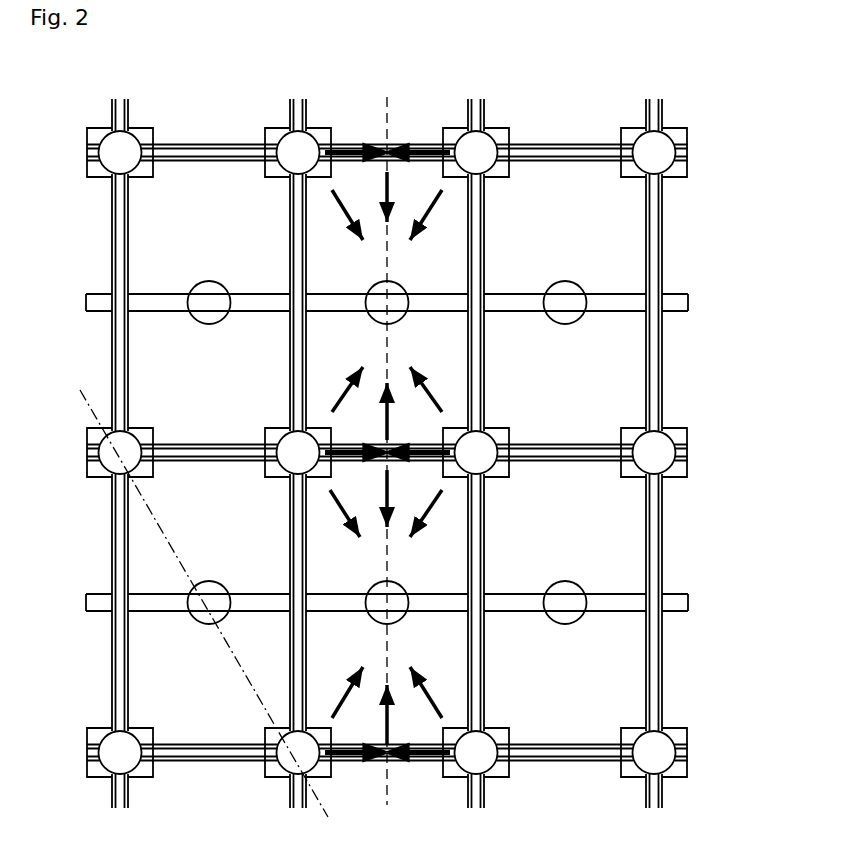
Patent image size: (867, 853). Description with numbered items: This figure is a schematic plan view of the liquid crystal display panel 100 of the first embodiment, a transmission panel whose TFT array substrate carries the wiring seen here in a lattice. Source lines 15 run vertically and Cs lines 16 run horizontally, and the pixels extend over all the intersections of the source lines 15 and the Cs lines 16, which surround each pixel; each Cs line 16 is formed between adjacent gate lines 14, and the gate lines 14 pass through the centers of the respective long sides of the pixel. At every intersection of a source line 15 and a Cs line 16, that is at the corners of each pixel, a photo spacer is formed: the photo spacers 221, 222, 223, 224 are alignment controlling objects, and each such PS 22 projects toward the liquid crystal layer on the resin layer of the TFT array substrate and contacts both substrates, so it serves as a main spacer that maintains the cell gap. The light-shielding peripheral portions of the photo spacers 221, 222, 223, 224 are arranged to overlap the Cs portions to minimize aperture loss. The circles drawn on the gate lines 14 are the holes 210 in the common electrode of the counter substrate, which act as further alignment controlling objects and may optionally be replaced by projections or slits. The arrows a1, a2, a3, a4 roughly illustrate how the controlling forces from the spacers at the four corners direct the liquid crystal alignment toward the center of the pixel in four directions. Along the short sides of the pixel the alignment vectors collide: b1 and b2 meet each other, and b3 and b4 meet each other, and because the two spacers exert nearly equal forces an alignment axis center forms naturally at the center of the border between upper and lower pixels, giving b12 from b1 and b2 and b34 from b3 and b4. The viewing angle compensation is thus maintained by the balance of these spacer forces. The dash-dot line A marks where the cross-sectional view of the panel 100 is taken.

The liquid crystal display panel 100 is at (695, 108).
The hole 210 is at (585, 288).
The photo spacer 221 is at (485, 145).
The photo spacer 222 is at (292, 145).
The photo spacer 223 is at (287, 450).
The photo spacer 224 is at (487, 448).
The photo spacer 22 is at (108, 463).
The Cs line 16 is at (680, 438).
The gate line 14 is at (680, 602).
The source line 15 is at (655, 675).
The arrow a1 is at (432, 208).
The arrow a2 is at (338, 210).
The arrow a3 is at (342, 393).
The arrow a4 is at (432, 393).
The arrow b1 is at (423, 152).
The arrow b2 is at (355, 152).
The arrow b3 is at (350, 452).
The arrow b4 is at (433, 455).
The arrow b12 is at (387, 172).
The arrow b34 is at (388, 427).
The A-A' line A is at (108, 373).